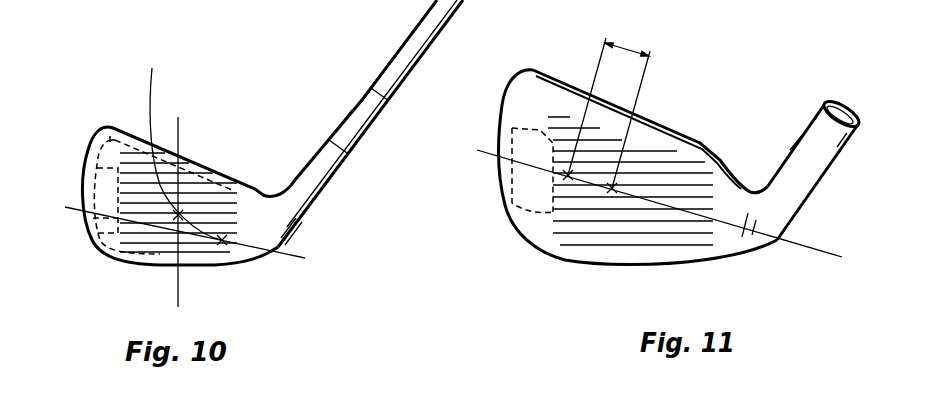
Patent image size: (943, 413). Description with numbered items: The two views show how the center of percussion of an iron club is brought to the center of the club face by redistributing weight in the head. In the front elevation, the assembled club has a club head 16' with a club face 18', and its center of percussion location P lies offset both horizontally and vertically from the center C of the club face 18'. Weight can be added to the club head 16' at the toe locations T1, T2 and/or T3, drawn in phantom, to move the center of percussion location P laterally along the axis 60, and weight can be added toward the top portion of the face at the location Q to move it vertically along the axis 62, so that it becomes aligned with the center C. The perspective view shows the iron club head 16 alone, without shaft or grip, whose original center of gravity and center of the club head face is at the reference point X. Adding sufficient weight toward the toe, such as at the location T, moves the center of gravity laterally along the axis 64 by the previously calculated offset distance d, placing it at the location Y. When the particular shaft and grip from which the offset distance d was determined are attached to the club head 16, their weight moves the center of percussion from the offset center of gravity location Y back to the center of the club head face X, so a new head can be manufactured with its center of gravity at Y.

In FIG. 10, the club head 16' is at (239, 132).
In FIG. 10, the club face 18' is at (184, 284).
In FIG. 10, the vertical axis 62 is at (178, 130).
In FIG. 10, the horizontal axis 60 is at (300, 257).
In FIG. 10, the center of club head face C is at (182, 144).
In FIG. 10, the top weight location Q is at (198, 167).
In FIG. 10, the center of percussion location P is at (222, 240).
In FIG. 10, the toe location T1 is at (97, 185).
In FIG. 10, the toe location T2 is at (110, 138).
In FIG. 10, the toe location T3 is at (103, 241).
In FIG. 11, the iron club head 16 is at (651, 167).
In FIG. 11, the toe weight location T is at (505, 142).
In FIG. 11, the lateral axis 64 is at (843, 257).
In FIG. 11, the center of club head face X is at (612, 188).
In FIG. 11, the center of gravity location Y is at (568, 175).
In FIG. 11, the offset distance d is at (609, 104).